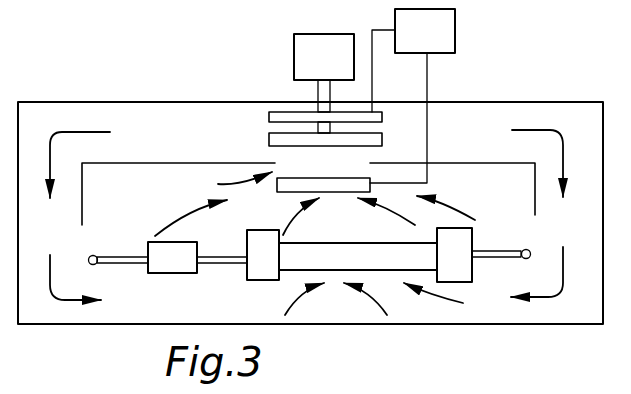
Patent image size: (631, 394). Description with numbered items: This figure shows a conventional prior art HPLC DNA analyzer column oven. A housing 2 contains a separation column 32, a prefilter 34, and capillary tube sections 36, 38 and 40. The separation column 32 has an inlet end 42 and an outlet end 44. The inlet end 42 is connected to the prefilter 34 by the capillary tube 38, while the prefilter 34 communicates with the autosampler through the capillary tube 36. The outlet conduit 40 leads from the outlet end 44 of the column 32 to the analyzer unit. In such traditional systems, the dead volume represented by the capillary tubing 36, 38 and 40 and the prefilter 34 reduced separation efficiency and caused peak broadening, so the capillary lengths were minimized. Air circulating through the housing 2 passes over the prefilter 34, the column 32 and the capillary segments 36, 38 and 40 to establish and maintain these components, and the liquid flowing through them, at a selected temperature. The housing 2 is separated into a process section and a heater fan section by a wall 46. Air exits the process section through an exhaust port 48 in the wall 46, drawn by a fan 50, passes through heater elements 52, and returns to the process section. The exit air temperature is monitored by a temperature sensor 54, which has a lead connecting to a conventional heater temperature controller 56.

The housing 2 is at (211, 141).
The separation column 32 is at (365, 243).
The prefilter 34 is at (172, 273).
The capillary tube 36 is at (117, 257).
The capillary tube 38 is at (218, 257).
The outlet conduit 40 is at (492, 251).
The inlet end 42 is at (258, 274).
The outlet end 44 is at (457, 268).
The wall 46 is at (114, 163).
The exhaust port 48 is at (227, 184).
The fan 50 is at (385, 151).
The heater elements 52 is at (285, 112).
The temperature sensor 54 is at (338, 178).
The heater temperature controller 56 is at (438, 44).